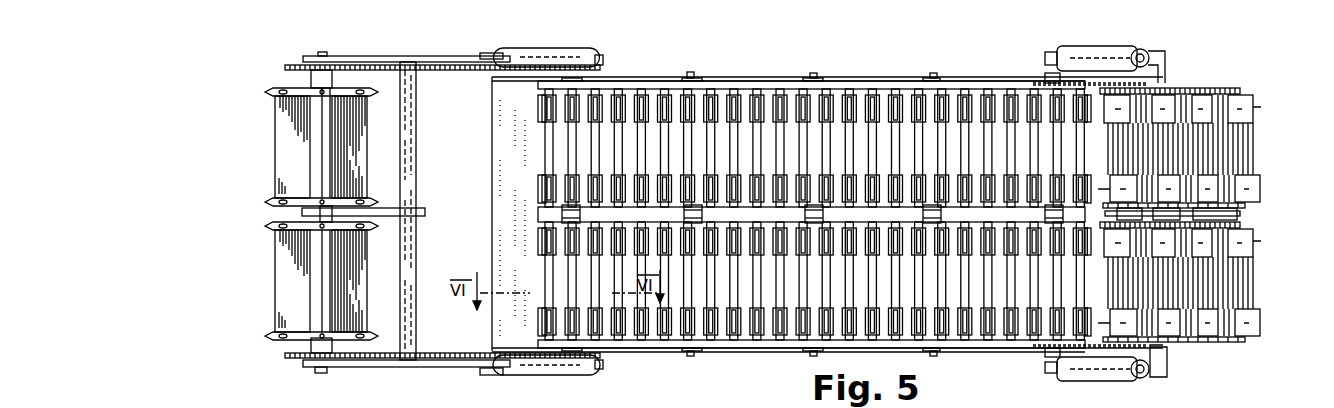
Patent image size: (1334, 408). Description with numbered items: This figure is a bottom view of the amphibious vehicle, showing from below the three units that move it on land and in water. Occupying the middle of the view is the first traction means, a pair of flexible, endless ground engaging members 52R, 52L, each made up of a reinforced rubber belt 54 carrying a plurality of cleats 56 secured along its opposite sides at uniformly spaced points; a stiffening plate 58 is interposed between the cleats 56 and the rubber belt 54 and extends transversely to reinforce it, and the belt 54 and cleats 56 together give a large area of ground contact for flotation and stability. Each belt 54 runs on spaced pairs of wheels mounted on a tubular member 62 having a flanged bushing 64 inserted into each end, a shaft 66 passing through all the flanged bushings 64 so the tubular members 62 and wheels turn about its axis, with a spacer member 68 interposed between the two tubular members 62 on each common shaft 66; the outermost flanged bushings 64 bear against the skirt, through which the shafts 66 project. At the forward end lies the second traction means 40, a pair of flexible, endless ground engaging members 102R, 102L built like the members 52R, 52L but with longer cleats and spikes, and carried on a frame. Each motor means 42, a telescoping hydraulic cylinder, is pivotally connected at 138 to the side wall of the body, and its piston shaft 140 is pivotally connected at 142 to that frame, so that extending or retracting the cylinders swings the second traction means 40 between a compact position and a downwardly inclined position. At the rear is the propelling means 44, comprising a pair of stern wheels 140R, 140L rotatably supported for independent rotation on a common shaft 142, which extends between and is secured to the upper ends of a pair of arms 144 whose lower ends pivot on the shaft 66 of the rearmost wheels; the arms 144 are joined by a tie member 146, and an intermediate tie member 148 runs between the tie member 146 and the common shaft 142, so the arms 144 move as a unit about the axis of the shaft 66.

The second traction means 40 is at (1262, 176).
The motor means 42 is at (1120, 48).
The propelling means 44 is at (245, 100).
The flexible, endless ground engaging member 52R is at (530, 153).
The flexible, endless ground engaging member 52L is at (530, 259).
The reinforced rubber belt 54 is at (770, 95).
The cleats 56 is at (685, 143).
The stiffening plate 58 is at (874, 170).
The tubular member 62 is at (752, 80).
The flanged bushing 64 is at (686, 77).
The shaft 66 is at (690, 72).
The spacer member 68 is at (682, 213).
The flexible, endless ground engaging member 102R is at (1248, 121).
The flexible, endless ground engaging member 102L is at (1253, 284).
The pivotal connection 138 is at (1050, 53).
The piston shaft 140 is at (1150, 377).
The stern wheel 140R is at (275, 153).
The stern wheel 140L is at (275, 282).
The common shaft 142 is at (322, 373).
The arms 144 is at (384, 56).
The tie member 146 is at (416, 112).
The intermediate tie member 148 is at (425, 209).